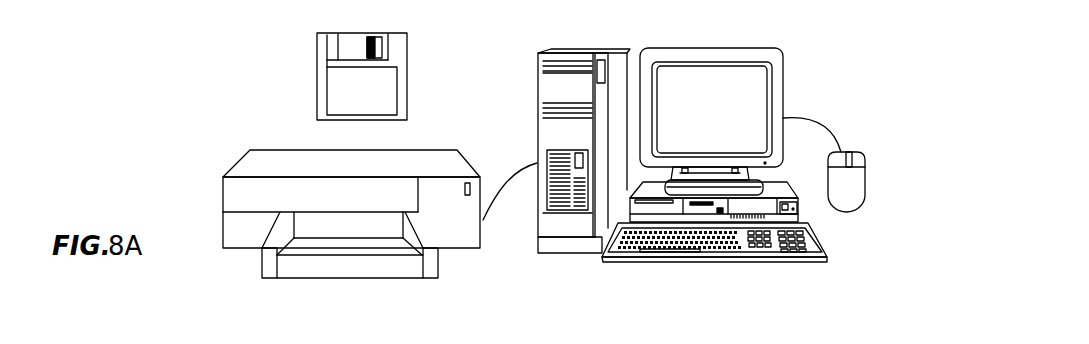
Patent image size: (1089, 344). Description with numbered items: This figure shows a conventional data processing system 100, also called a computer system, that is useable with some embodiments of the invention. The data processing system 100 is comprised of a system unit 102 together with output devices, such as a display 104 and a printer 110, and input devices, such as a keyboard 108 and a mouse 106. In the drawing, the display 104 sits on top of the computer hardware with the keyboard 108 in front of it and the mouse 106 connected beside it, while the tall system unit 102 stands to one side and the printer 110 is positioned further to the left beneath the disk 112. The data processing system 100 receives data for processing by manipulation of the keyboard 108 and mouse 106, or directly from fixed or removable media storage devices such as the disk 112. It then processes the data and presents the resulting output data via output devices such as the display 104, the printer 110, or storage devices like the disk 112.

The data processing system 100 is at (992, 98).
The system unit 102 is at (603, 137).
The display 104 is at (747, 113).
The mouse 106 is at (861, 165).
The keyboard 108 is at (732, 259).
The printer 110 is at (272, 150).
The disk 112 is at (398, 76).